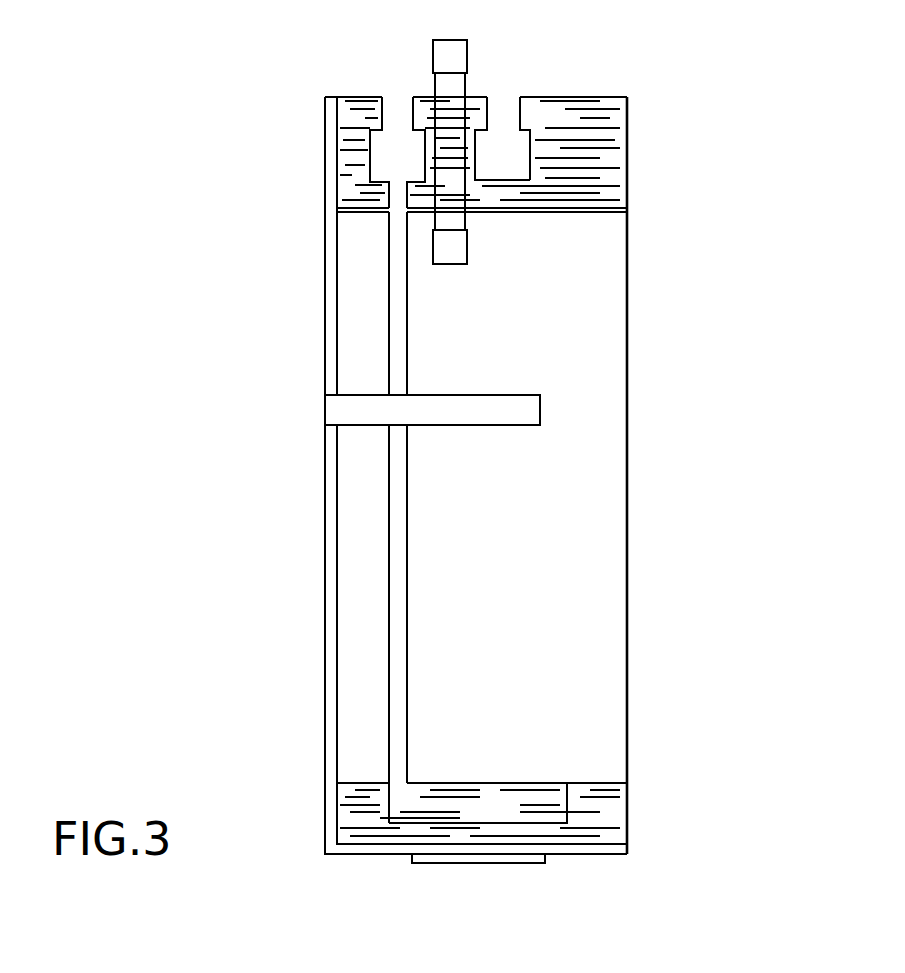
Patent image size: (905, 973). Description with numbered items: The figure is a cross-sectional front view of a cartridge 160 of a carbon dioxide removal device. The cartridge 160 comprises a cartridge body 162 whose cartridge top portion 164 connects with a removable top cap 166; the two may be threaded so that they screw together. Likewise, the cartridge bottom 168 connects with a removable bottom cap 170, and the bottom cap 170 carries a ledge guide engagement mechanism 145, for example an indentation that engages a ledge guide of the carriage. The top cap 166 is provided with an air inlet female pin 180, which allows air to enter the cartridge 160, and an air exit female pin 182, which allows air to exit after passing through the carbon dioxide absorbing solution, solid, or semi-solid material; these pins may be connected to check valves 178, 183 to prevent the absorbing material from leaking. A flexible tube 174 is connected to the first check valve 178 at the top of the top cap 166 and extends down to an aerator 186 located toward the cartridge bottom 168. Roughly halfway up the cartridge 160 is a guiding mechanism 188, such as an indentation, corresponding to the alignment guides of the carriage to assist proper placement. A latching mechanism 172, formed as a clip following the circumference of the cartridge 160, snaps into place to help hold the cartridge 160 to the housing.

The ledge guide engagement mechanism 145 is at (545, 866).
The cartridge 160 is at (212, 300).
The cartridge body 162 is at (645, 480).
The cartridge top portion 164 is at (290, 159).
The top cap 166 is at (632, 178).
The cartridge bottom 168 is at (325, 792).
The bottom cap 170 is at (632, 832).
The latching mechanism 172 is at (468, 245).
The flexible tube 174 is at (389, 247).
The check valve 178 is at (398, 150).
The air inlet female pin 180 is at (395, 108).
The air exit female pin 182 is at (503, 108).
The check valve 183 is at (522, 163).
The aerator 186 is at (582, 798).
The guiding mechanism 188 is at (325, 410).